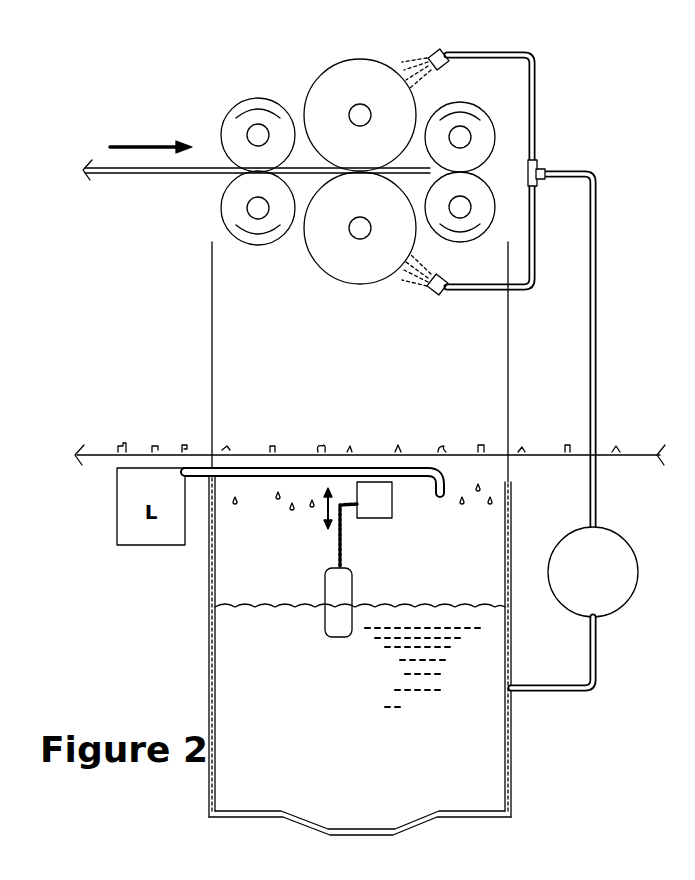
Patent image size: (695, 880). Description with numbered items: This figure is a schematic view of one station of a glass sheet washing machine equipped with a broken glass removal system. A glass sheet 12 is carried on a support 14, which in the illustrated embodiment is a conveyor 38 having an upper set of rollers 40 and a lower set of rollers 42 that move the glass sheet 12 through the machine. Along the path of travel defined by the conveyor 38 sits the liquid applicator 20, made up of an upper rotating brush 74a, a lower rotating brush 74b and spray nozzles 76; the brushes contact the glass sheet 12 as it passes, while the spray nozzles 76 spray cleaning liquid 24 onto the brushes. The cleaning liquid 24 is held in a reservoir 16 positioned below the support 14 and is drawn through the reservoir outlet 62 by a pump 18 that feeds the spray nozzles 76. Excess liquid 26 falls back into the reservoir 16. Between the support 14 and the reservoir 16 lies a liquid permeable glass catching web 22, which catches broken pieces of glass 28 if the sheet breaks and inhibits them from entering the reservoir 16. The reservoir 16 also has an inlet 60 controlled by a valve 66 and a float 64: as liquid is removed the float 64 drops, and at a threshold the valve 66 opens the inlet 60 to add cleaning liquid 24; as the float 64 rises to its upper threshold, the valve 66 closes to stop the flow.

The glass sheet 12 is at (120, 176).
The support 14 is at (205, 203).
The reservoir 16 is at (209, 650).
The pump 18 is at (610, 597).
The liquid applicator 20 is at (404, 52).
The glass catching web 22 is at (623, 458).
The cleaning liquid 24 is at (250, 785).
The excess liquid 26 is at (290, 506).
The broken pieces of glass 28 is at (330, 446).
The conveyor 38 is at (227, 181).
The upper set of rollers 40 is at (237, 130).
The lower set of rollers 42 is at (235, 218).
The inlet 60 is at (407, 478).
The outlet 62 is at (540, 692).
The float 64 is at (346, 590).
The valve 66 is at (388, 512).
The upper rotating brush 74a is at (342, 86).
The lower rotating brush 74b is at (325, 252).
The spray nozzles 76 is at (444, 68).